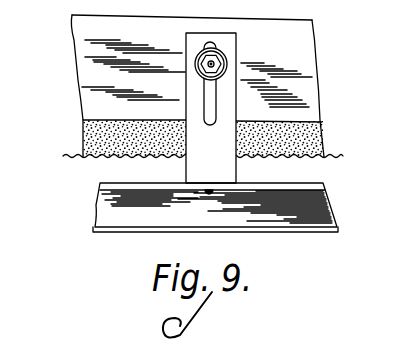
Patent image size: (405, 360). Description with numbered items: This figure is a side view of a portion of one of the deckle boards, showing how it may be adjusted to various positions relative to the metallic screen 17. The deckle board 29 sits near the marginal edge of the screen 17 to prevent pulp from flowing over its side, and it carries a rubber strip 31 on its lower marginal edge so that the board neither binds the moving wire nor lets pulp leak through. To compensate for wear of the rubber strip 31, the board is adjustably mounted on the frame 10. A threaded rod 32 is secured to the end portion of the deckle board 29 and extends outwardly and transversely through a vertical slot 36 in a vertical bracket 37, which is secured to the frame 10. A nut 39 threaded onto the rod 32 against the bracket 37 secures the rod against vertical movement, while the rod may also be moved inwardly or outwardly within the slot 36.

The frame 10 is at (325, 205).
The metallic screen 17 is at (78, 158).
The deckle board 29 is at (306, 60).
The rubber strip 31 is at (321, 148).
The threaded rod 32 is at (198, 58).
The vertical slot 36 is at (216, 106).
The vertical bracket 37 is at (211, 108).
The nut 39 is at (215, 63).